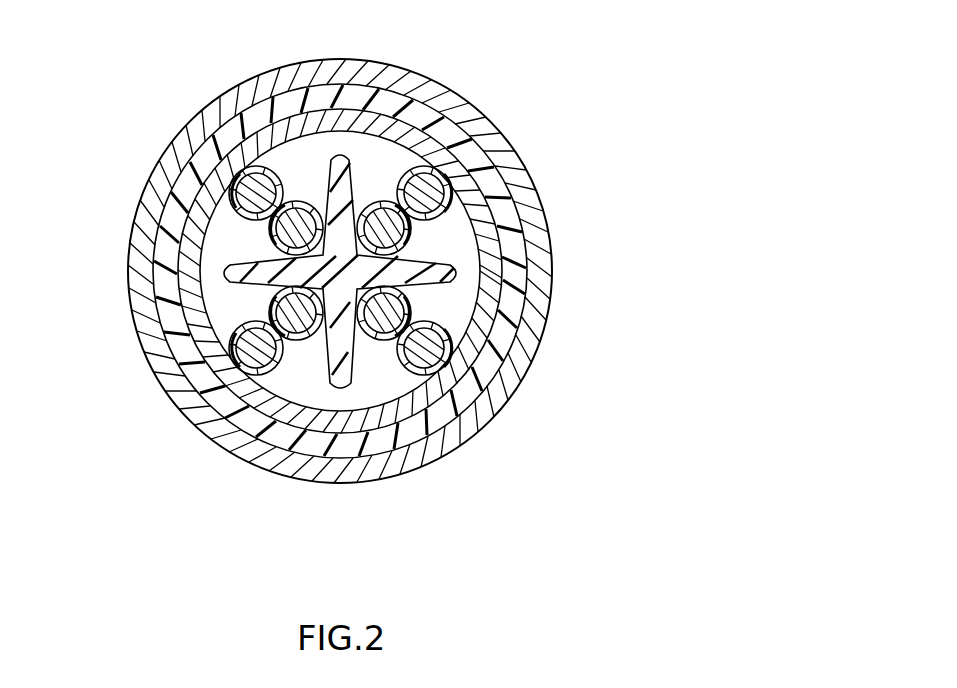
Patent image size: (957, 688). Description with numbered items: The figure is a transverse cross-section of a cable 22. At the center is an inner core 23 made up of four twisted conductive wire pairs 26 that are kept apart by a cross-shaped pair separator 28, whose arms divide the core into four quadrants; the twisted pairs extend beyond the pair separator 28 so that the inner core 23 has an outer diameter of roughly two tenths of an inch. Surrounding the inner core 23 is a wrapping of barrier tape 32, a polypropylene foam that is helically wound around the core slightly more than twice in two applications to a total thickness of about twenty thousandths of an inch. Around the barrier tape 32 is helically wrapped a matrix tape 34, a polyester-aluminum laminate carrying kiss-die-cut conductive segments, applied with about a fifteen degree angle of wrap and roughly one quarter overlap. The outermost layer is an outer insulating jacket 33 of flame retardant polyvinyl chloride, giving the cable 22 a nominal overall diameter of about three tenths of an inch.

The cable 22 is at (575, 188).
The inner core 23 is at (300, 368).
The twisted conductive wire pairs 26 is at (261, 352).
The pair separator 28 is at (247, 285).
The barrier tape 32 is at (505, 327).
The outer insulating jacket 33 is at (505, 402).
The matrix tape 34 is at (468, 103).